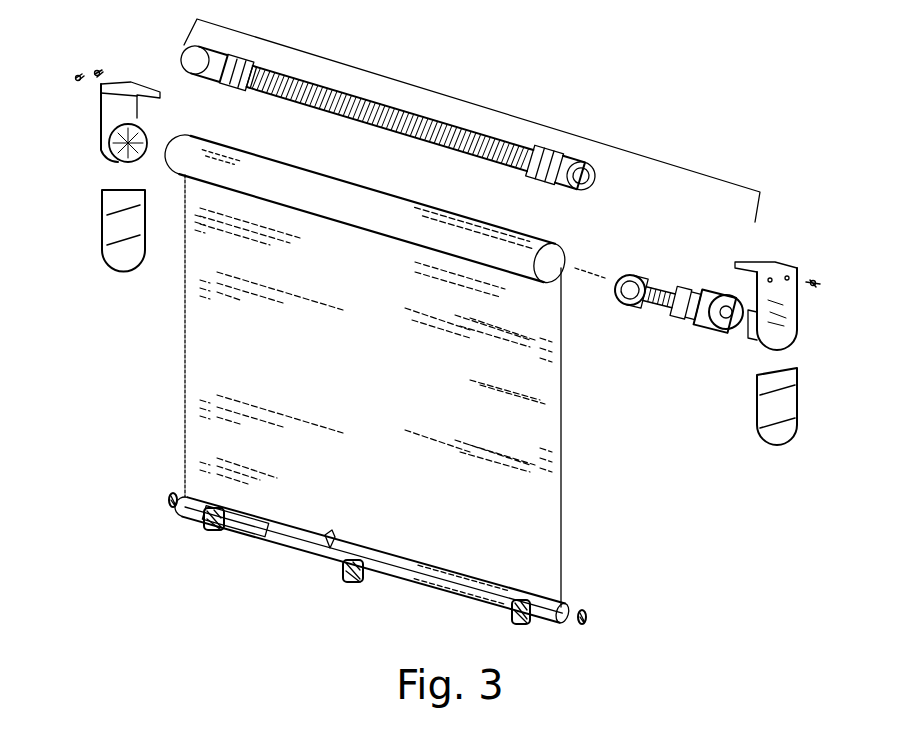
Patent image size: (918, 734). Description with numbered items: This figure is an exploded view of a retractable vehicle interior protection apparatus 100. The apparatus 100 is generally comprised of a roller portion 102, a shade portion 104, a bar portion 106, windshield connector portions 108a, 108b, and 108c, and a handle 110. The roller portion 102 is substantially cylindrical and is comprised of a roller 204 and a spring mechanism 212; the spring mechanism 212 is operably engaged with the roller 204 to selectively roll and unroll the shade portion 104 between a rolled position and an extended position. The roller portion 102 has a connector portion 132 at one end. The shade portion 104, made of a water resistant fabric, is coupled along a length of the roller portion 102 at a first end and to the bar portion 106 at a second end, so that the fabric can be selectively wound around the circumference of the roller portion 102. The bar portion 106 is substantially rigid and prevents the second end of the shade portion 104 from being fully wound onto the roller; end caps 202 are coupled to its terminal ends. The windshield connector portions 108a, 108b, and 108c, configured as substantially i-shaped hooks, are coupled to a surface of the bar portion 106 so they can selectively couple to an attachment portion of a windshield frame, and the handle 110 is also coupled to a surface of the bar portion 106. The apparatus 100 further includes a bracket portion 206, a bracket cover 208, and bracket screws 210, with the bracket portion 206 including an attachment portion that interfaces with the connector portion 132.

The retractable vehicle interior protection apparatus 100 is at (823, 141).
The roller portion 102 is at (498, 116).
The shade portion 104 is at (543, 415).
The bar portion 106 is at (440, 590).
The windshield connector portion 108a is at (208, 530).
The windshield connector portion 108b is at (348, 583).
The windshield connector portion 108c is at (530, 623).
The handle 110 is at (330, 548).
The connector portion 132 is at (722, 322).
The end cap 202 is at (168, 494).
The roller 204 is at (400, 130).
The bracket portion 206 is at (97, 133).
The bracket cover 208 is at (95, 222).
The bracket screws 210 is at (75, 76).
The spring mechanism 212 is at (668, 275).